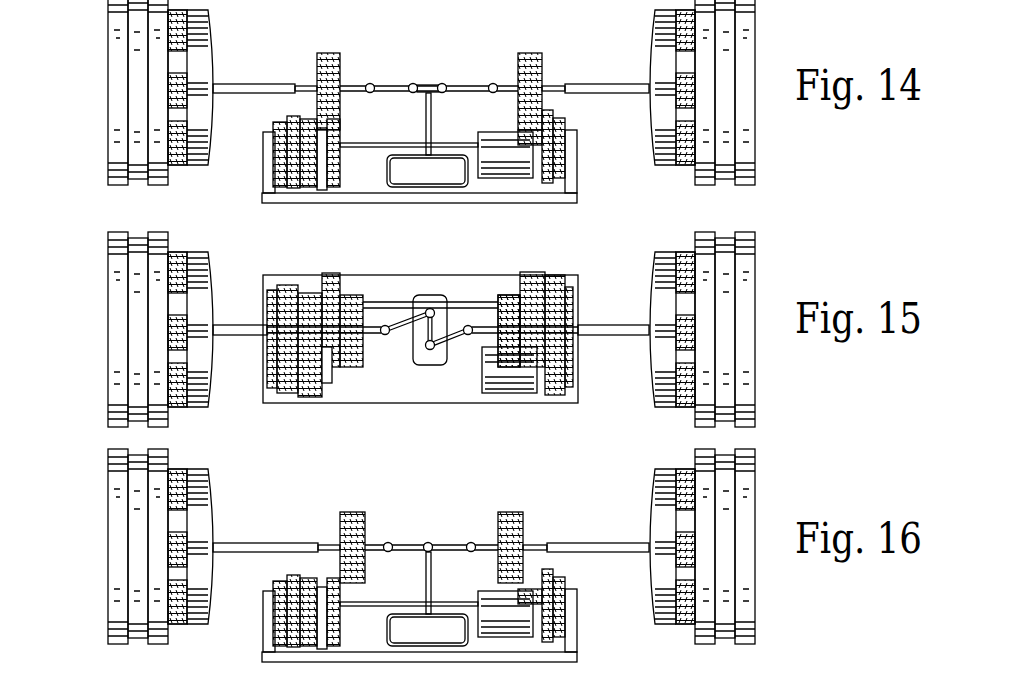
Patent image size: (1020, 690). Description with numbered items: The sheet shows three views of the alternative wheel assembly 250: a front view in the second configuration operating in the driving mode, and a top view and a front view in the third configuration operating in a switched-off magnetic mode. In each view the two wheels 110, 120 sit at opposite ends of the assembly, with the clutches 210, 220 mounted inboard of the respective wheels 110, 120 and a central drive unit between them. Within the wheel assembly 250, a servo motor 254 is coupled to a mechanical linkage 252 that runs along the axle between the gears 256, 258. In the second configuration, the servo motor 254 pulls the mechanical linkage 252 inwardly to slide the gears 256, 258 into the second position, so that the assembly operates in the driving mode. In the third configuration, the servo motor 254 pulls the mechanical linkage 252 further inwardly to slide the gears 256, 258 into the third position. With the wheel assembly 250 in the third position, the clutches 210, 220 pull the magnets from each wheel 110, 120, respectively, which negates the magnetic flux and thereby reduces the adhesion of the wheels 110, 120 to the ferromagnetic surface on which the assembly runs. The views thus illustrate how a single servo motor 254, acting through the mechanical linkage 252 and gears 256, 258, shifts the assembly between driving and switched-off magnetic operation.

In FIG. 14, the wheel 110 is at (760, 38).
In FIG. 15, the wheel 110 is at (762, 272).
In FIG. 16, the wheel 110 is at (762, 505).
In FIG. 14, the wheel 120 is at (100, 129).
In FIG. 15, the wheel 120 is at (100, 365).
In FIG. 16, the wheel 120 is at (100, 597).
In FIG. 15, the clutch 210 is at (665, 248).
In FIG. 16, the clutch 210 is at (648, 470).
In FIG. 15, the clutch 220 is at (195, 250).
In FIG. 16, the clutch 220 is at (197, 466).
In FIG. 14, the alternative wheel assembly 250 is at (431, 128).
In FIG. 15, the alternative wheel assembly 250 is at (431, 333).
In FIG. 16, the alternative wheel assembly 250 is at (431, 560).
In FIG. 14, the mechanical linkage 252 is at (428, 84).
In FIG. 15, the mechanical linkage 252 is at (403, 337).
In FIG. 16, the mechanical linkage 252 is at (430, 543).
In FIG. 14, the servo motor 254 is at (433, 190).
In FIG. 15, the servo motor 254 is at (437, 366).
In FIG. 16, the servo motor 254 is at (415, 612).
In FIG. 14, the gear 256 is at (545, 68).
In FIG. 15, the gear 256 is at (505, 293).
In FIG. 16, the gear 256 is at (525, 525).
In FIG. 14, the gear 258 is at (317, 68).
In FIG. 15, the gear 258 is at (357, 367).
In FIG. 16, the gear 258 is at (340, 520).